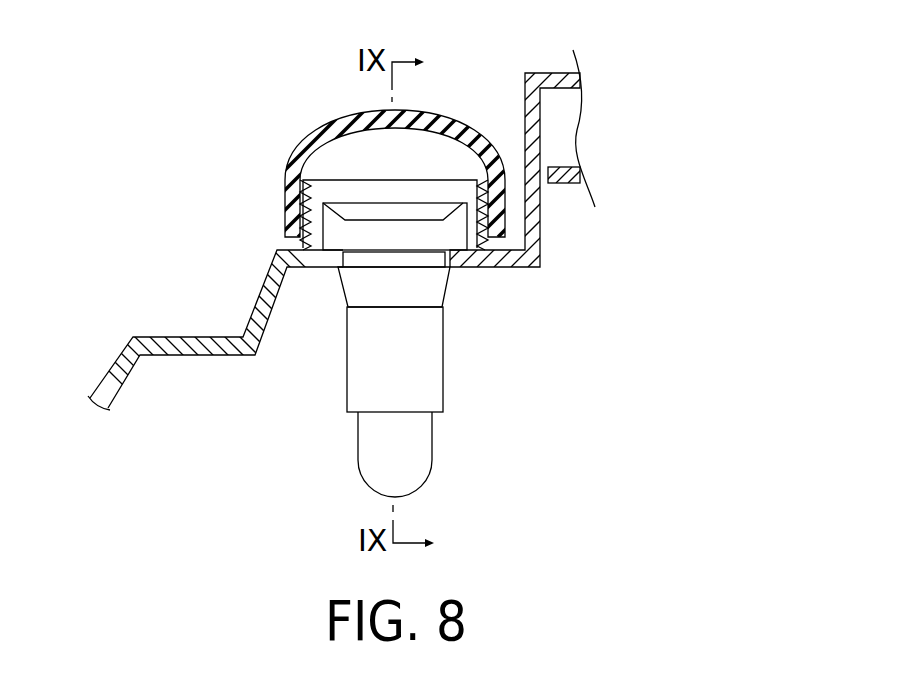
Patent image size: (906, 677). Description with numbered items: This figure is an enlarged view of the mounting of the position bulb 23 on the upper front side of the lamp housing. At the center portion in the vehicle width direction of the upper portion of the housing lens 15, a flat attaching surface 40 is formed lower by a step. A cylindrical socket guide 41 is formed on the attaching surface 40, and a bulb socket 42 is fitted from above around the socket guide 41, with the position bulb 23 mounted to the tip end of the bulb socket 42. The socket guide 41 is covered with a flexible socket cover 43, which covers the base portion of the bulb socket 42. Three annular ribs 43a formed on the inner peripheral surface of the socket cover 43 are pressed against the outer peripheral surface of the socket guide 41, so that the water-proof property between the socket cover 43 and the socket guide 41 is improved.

The housing lens 15 is at (168, 334).
The position bulb 23 is at (358, 460).
The attaching surface 40 is at (483, 267).
The socket guide 41 is at (472, 197).
The bulb socket 42 is at (343, 352).
The socket cover 43 is at (327, 122).
The annular ribs 43a is at (315, 235).